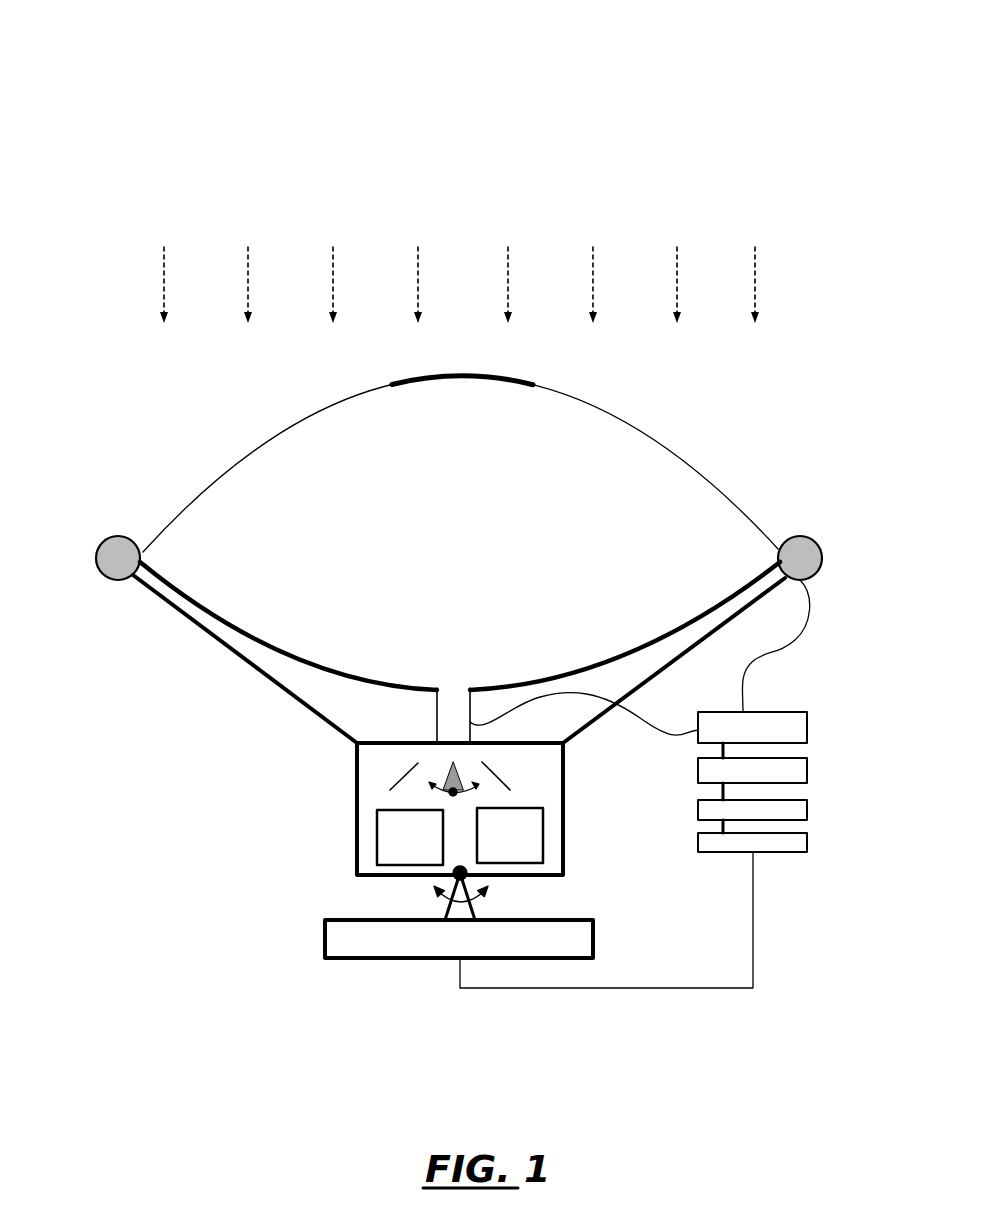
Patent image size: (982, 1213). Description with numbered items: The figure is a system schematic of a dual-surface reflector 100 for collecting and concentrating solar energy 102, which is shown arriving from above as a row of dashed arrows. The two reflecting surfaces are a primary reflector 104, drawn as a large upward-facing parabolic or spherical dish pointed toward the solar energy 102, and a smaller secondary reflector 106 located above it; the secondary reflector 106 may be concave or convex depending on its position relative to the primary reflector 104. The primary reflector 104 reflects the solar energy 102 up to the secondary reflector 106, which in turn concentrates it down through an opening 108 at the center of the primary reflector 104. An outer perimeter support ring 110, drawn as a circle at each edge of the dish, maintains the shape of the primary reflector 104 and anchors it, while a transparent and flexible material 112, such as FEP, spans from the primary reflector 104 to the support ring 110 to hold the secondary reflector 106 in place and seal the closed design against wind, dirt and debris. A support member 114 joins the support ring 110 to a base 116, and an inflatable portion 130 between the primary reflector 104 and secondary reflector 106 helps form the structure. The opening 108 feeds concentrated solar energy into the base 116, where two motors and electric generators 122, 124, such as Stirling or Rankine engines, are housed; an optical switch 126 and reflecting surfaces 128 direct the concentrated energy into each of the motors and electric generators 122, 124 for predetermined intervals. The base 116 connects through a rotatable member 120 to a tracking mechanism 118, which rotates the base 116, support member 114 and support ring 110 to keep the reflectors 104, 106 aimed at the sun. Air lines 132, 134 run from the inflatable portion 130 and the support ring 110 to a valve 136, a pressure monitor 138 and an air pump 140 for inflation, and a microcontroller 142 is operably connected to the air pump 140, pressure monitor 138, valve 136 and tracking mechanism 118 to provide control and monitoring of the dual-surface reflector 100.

The dual-surface reflector 100 is at (543, 74).
The solar energy 102 is at (786, 258).
The primary reflector 104 is at (283, 647).
The secondary reflector 106 is at (437, 392).
The opening 108 is at (459, 678).
The outer perimeter support ring 110 is at (102, 577).
The transparent and flexible material 112 is at (618, 424).
The support member 114 is at (213, 640).
The base 116 is at (357, 770).
The tracking mechanism 118 is at (325, 937).
The rotatable member 120 is at (478, 893).
The motor and electric generator 122 is at (377, 826).
The motor and electric generator 124 is at (543, 822).
The optical switch 126 is at (478, 788).
The reflecting surfaces 128 is at (400, 777).
The inflatable portion 130 is at (270, 615).
The air line 132 is at (673, 732).
The air line 134 is at (813, 637).
The valve 136 is at (810, 720).
The pressure monitor 138 is at (810, 765).
The air pump 140 is at (810, 805).
The microcontroller 142 is at (810, 843).